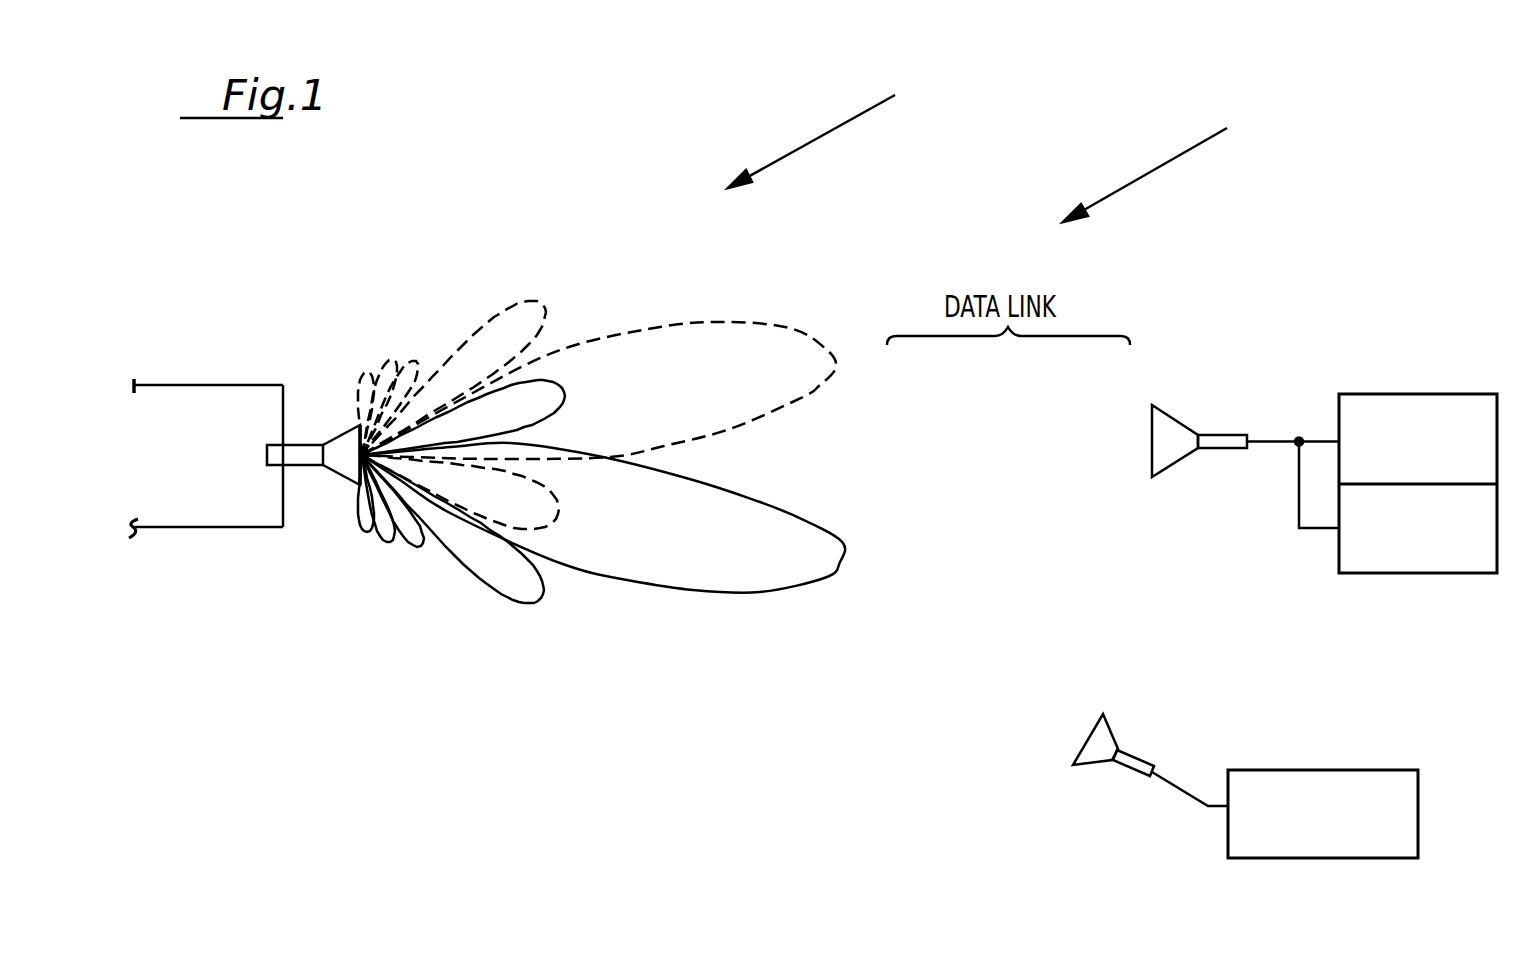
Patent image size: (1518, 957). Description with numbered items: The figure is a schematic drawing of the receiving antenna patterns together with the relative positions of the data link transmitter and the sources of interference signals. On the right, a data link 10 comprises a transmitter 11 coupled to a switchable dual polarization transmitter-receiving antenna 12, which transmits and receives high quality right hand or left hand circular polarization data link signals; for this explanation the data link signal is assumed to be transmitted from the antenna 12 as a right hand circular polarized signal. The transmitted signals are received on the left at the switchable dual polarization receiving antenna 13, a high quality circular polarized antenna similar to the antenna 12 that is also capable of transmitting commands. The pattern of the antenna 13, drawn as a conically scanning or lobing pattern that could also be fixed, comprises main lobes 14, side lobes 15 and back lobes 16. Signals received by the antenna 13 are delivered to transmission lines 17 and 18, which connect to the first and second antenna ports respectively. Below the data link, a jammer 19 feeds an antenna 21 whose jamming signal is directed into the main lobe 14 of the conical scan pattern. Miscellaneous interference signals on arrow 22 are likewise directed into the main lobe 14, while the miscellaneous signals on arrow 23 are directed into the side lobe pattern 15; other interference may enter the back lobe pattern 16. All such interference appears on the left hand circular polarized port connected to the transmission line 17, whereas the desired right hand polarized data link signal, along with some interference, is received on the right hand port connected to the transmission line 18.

The data link 10 is at (1218, 335).
The transmitter 11 is at (1415, 386).
The transmitter-receiving antenna 12 is at (1178, 455).
The receiving antenna 13 is at (266, 452).
The main lobes 14 is at (657, 325).
The side lobes 15 is at (495, 310).
The back lobes 16 is at (386, 352).
The transmission line 17 is at (180, 388).
The transmission line 18 is at (197, 530).
The jammer 19 is at (1318, 775).
The antenna 21 is at (1132, 748).
The arrow 22 is at (1147, 176).
The arrow 23 is at (820, 138).